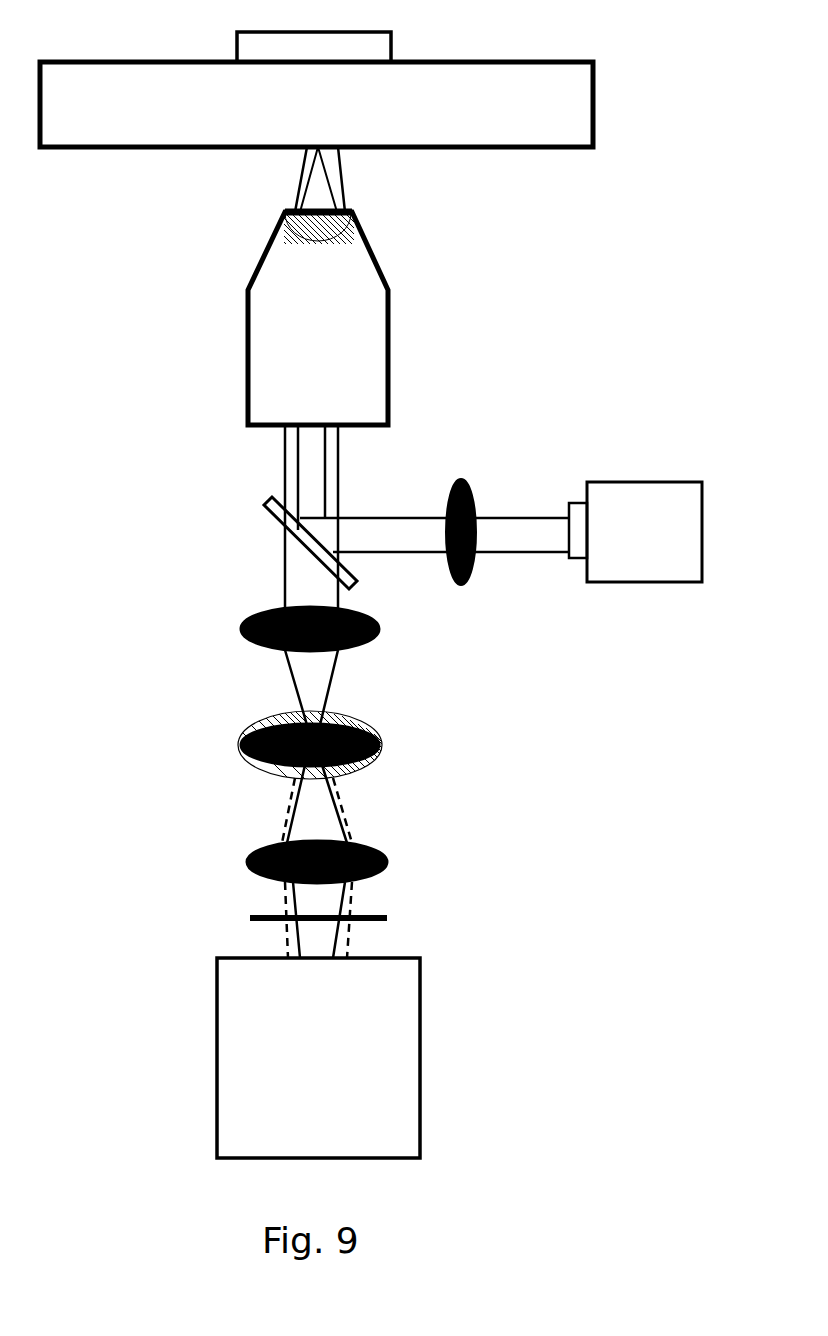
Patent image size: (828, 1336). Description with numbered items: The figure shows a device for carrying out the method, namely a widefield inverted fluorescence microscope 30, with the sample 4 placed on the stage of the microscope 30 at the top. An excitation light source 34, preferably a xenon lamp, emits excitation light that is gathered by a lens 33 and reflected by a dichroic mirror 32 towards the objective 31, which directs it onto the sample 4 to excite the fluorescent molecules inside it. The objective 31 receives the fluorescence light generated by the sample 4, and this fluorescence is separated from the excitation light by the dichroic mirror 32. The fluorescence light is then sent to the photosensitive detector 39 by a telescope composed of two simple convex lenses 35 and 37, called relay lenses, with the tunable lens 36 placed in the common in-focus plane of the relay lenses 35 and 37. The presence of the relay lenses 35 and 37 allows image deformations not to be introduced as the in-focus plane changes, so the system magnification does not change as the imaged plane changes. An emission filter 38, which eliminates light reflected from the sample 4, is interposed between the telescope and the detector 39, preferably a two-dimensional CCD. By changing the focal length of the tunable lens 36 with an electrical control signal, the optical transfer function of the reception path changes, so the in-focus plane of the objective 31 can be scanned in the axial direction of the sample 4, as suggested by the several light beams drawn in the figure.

The sample 4 is at (383, 31).
The microscope 30 is at (593, 108).
The objective 31 is at (388, 338).
The dichroic mirror 32 is at (265, 502).
The lens 33 is at (461, 480).
The excitation light source 34 is at (648, 482).
The relay lens 35 is at (245, 630).
The tunable lens 36 is at (245, 747).
The relay lens 37 is at (250, 868).
The emission filter 38 is at (390, 920).
The photosensitive detector 39 is at (420, 1020).